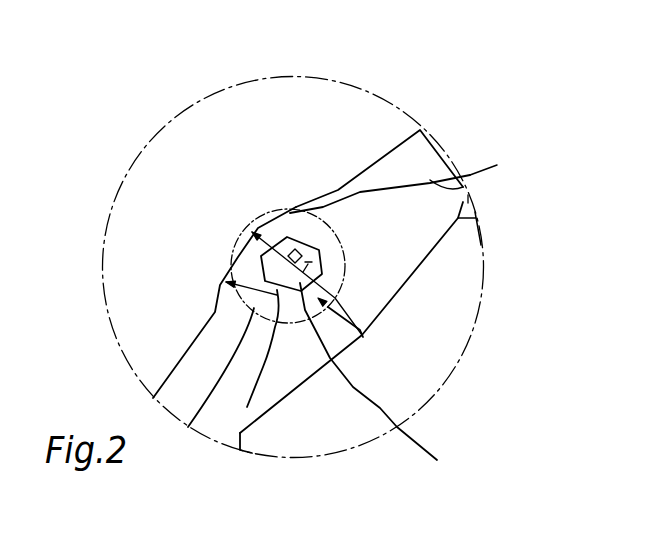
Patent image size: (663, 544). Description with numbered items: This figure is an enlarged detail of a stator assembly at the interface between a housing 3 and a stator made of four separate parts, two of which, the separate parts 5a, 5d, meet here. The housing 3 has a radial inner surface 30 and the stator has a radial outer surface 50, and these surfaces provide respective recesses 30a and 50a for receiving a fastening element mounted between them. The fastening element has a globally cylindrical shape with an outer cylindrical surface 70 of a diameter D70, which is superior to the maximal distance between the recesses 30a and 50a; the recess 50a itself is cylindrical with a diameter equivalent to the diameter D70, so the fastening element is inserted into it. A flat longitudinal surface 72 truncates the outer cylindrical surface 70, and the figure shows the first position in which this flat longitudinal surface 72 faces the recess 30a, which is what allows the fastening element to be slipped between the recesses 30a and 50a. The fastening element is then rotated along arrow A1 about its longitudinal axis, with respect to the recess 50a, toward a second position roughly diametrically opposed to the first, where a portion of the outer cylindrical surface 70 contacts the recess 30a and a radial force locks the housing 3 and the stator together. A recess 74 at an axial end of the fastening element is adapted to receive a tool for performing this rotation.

The housing 3 is at (328, 113).
The outer cylindrical surface 70 is at (293, 325).
The radial outer surface 50 is at (445, 165).
The recess 50a is at (340, 258).
The flat longitudinal surface 72 is at (280, 218).
The diameter D70 is at (409, 146).
The radial inner surface 30 is at (497, 165).
The separate part 5a is at (458, 198).
The separate part 5d is at (242, 407).
The recess 30a is at (253, 307).
The recess 74 is at (381, 382).
The arrow A1 is at (225, 195).